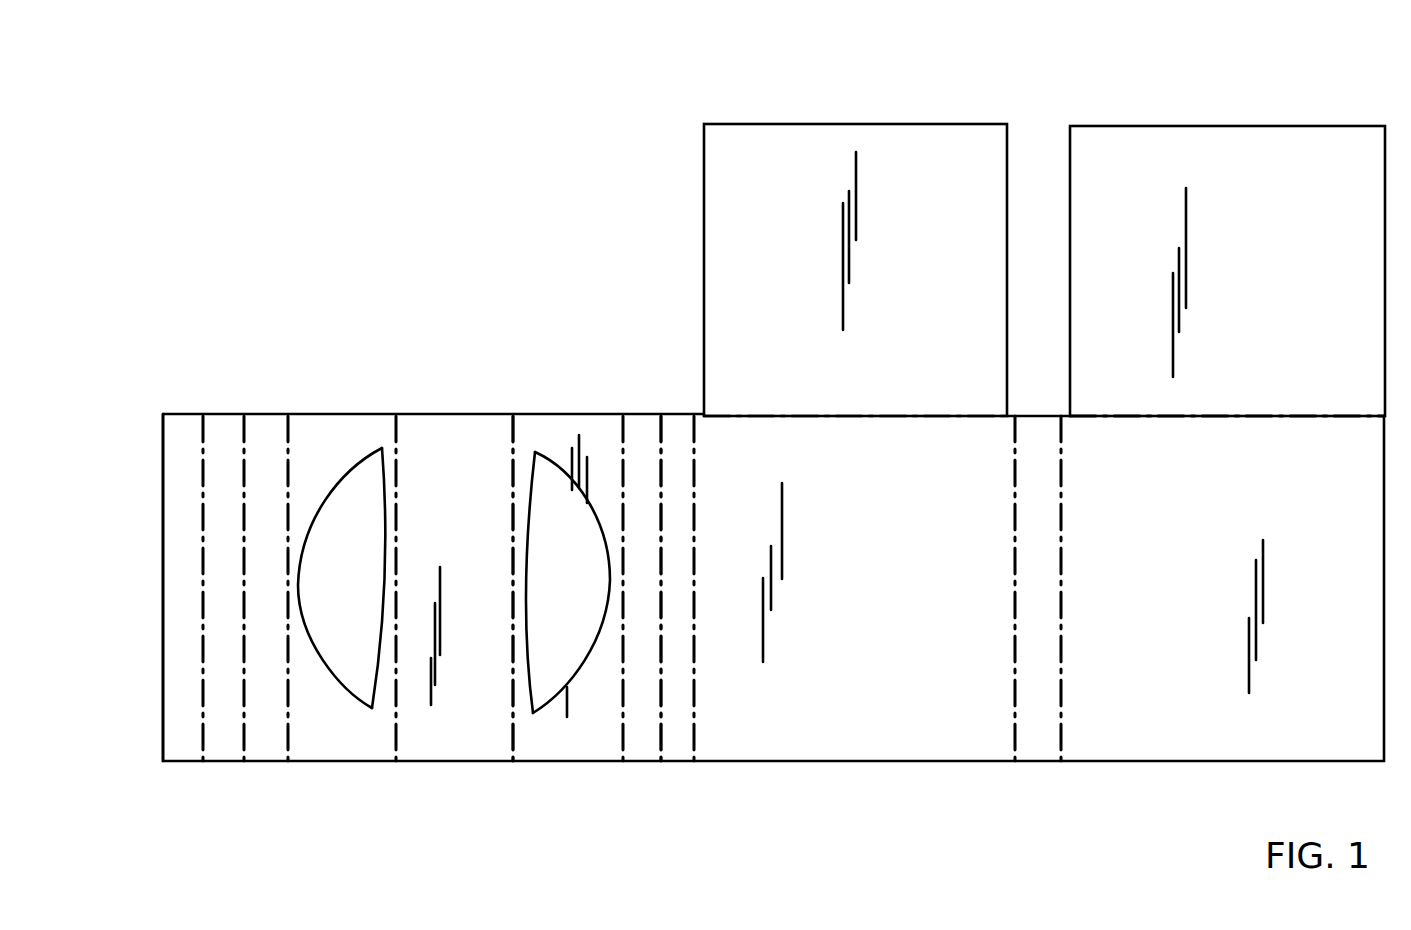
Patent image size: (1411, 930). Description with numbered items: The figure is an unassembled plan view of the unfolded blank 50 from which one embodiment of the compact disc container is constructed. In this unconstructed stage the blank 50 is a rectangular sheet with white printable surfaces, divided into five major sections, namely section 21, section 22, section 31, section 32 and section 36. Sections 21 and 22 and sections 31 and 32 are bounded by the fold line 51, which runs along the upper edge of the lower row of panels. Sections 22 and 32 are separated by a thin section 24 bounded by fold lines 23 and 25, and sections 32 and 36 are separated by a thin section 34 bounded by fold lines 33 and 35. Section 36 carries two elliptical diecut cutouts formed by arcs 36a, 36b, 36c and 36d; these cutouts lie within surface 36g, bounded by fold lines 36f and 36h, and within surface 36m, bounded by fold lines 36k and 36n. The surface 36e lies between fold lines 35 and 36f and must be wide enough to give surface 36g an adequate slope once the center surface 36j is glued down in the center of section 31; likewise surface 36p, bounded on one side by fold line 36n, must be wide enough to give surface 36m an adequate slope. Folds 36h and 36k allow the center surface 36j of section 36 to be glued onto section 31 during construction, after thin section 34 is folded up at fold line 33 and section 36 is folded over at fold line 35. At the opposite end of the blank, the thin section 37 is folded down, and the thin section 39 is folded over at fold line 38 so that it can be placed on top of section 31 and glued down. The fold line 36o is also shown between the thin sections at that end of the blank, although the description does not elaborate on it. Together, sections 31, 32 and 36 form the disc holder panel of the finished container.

The blank 50 is at (1332, 110).
The fold line 51 is at (1276, 424).
The section 21 is at (1120, 142).
The section 22 is at (1163, 742).
The fold line 23 is at (1061, 522).
The thin section 24 is at (1043, 742).
The fold line 25 is at (1015, 540).
The section 31 is at (780, 146).
The section 32 is at (823, 741).
The fold line 33 is at (694, 713).
The thin section 34 is at (681, 746).
The fold line 35 is at (661, 650).
The section 36 is at (440, 428).
The arc 36a is at (607, 575).
The arc 36b is at (522, 640).
The arc 36c is at (384, 642).
The arc 36d is at (303, 571).
The surface 36e is at (640, 433).
The fold line 36f is at (623, 742).
The surface 36g is at (547, 428).
The fold line 36h is at (514, 740).
The surface 36j is at (442, 744).
The fold line 36k is at (396, 741).
The surface 36m is at (348, 426).
The fold line 36n is at (288, 741).
The fold line 36o is at (244, 687).
The surface 36p is at (265, 426).
The thin section 37 is at (226, 743).
The fold line 38 is at (202, 684).
The thin section 39 is at (185, 743).